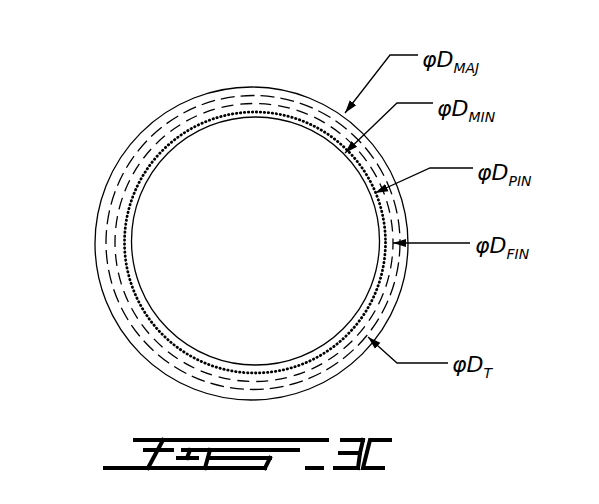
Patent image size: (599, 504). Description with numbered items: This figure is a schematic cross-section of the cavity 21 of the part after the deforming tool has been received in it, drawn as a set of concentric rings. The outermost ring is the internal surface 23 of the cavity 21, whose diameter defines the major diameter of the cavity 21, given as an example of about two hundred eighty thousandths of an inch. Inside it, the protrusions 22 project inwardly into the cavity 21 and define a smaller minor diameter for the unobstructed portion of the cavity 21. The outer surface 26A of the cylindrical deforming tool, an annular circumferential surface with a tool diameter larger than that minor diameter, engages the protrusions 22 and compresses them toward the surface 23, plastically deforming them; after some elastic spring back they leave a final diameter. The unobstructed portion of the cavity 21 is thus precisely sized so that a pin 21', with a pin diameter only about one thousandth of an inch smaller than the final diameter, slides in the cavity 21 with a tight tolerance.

The cavity 21 is at (228, 243).
The pin 21' is at (256, 198).
The protrusions 22 is at (127, 218).
The internal surface 23 is at (143, 346).
The outer surface 26A is at (118, 305).